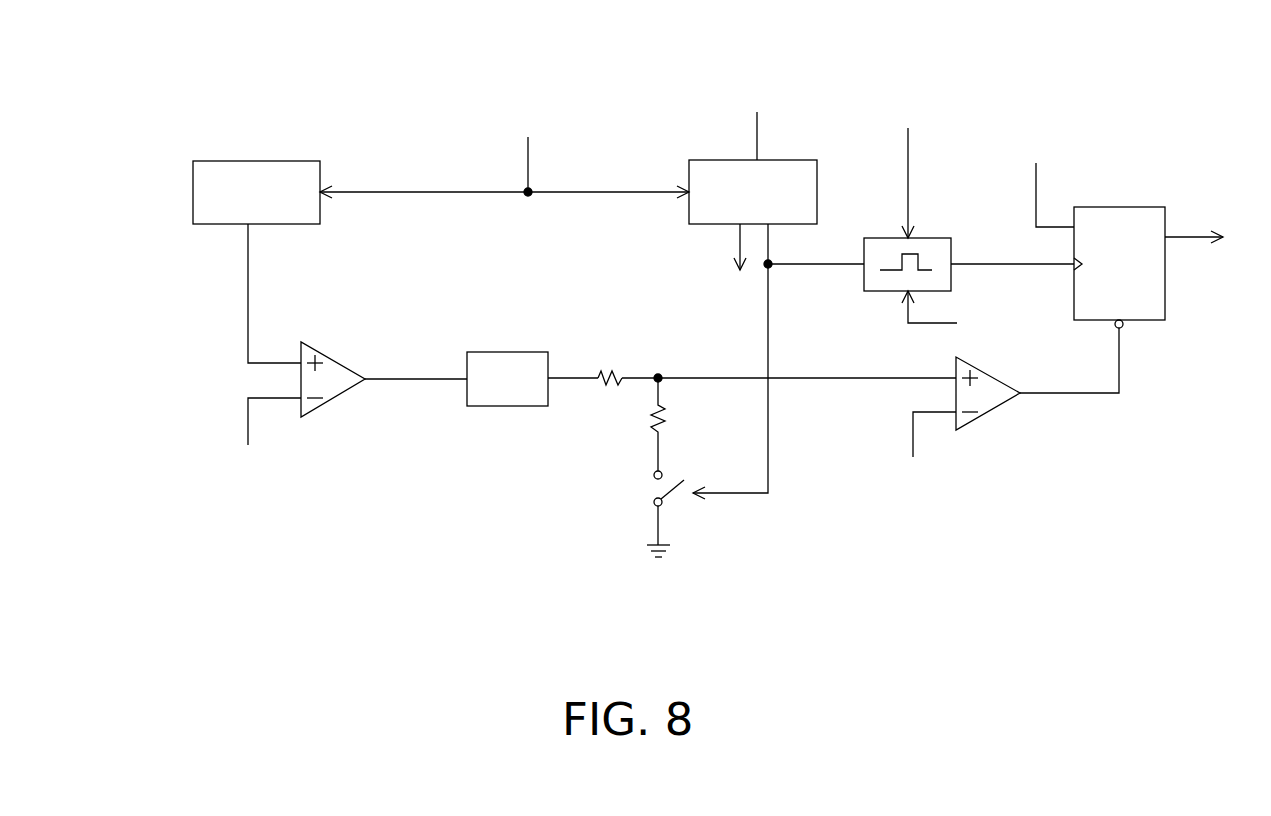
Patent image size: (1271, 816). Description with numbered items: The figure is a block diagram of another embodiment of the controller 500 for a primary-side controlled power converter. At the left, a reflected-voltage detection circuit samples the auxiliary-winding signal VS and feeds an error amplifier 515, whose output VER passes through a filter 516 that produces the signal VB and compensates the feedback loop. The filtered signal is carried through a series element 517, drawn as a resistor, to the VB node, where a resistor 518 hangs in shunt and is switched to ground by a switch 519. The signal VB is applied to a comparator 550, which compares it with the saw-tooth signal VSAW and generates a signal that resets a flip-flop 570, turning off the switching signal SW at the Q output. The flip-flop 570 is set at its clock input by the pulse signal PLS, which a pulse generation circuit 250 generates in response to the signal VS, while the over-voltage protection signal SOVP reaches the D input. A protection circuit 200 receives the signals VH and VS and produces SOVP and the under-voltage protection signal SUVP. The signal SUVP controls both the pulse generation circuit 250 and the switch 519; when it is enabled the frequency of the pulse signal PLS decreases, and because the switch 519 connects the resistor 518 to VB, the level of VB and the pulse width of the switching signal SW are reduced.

The controller 500 is at (1142, 51).
The protection circuit 200 is at (783, 160).
The pulse generation circuit 250 is at (934, 238).
The flip-flop 570 is at (1120, 207).
The error amplifier 515 is at (333, 355).
The filter 516 is at (497, 352).
The resistor 517 is at (610, 368).
The resistor 518 is at (663, 408).
The switch 519 is at (674, 493).
The comparator 550 is at (1000, 410).